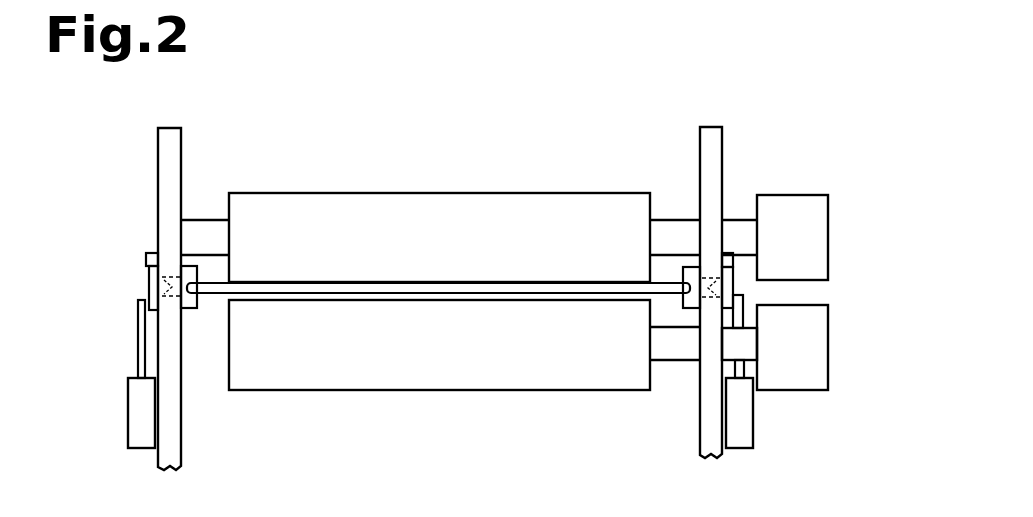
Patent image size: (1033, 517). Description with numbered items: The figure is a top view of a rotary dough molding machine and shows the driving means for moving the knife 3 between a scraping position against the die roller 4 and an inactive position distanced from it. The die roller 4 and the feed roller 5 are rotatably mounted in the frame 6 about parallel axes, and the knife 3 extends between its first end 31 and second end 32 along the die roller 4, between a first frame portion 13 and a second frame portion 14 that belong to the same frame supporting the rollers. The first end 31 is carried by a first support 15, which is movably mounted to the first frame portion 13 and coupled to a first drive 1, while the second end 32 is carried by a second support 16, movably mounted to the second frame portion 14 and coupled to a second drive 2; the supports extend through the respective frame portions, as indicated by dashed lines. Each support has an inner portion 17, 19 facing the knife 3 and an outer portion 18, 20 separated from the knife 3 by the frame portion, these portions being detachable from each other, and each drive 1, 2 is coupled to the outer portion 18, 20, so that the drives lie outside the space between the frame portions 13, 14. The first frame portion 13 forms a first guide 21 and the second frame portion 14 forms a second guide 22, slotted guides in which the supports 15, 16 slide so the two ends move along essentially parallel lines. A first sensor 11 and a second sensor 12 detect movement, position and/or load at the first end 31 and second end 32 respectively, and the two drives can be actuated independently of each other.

The first drive 1 is at (114, 391).
The second drive 2 is at (770, 421).
The knife 3 is at (282, 294).
The die roller 4 is at (402, 193).
The feed roller 5 is at (392, 391).
The frame 6 is at (712, 120).
The first sensor 11 is at (146, 254).
The second sensor 12 is at (735, 258).
The first frame portion 13 is at (157, 237).
The second frame portion 14 is at (722, 195).
The first support 15 is at (200, 310).
The second support 16 is at (683, 284).
The inner portion 17 is at (193, 327).
The outer portion 18 is at (130, 278).
The inner portion 19 is at (693, 327).
The outer portion 20 is at (748, 289).
The first guide 21 is at (172, 287).
The second guide 22 is at (737, 295).
The first end 31 is at (206, 250).
The second end 32 is at (670, 264).